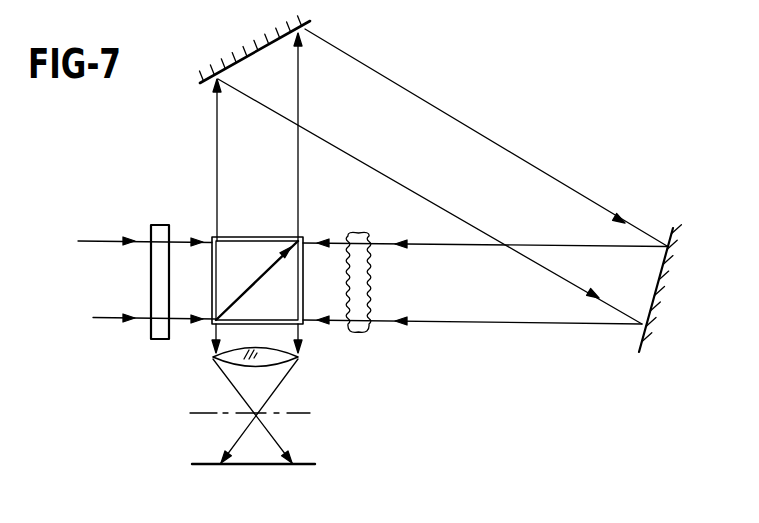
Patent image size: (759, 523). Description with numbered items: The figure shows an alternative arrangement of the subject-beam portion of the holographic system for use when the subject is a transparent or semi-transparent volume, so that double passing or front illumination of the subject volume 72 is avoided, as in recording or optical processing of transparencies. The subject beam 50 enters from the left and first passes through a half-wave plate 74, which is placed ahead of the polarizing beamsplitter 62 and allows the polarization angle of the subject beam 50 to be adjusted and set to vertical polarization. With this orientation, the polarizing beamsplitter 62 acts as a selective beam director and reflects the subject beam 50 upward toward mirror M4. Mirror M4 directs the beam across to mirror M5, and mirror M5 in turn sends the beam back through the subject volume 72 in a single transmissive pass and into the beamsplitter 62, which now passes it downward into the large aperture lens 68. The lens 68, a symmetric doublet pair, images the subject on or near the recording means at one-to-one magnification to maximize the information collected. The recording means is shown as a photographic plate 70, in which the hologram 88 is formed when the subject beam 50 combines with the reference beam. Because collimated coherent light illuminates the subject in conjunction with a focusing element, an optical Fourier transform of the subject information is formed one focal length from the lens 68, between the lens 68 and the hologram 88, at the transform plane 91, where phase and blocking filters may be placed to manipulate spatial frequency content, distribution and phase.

The mirror M4 is at (219, 72).
The mirror M5 is at (657, 297).
The subject beam 50 is at (120, 283).
The polarizing beamsplitter 62 is at (211, 238).
The large aperture lens 68 is at (278, 365).
The photographic plate 70 is at (307, 464).
The subject volume 72 is at (365, 335).
The half-wave plate 74 is at (150, 337).
The hologram 88 is at (309, 466).
The transform plane 91 is at (193, 402).